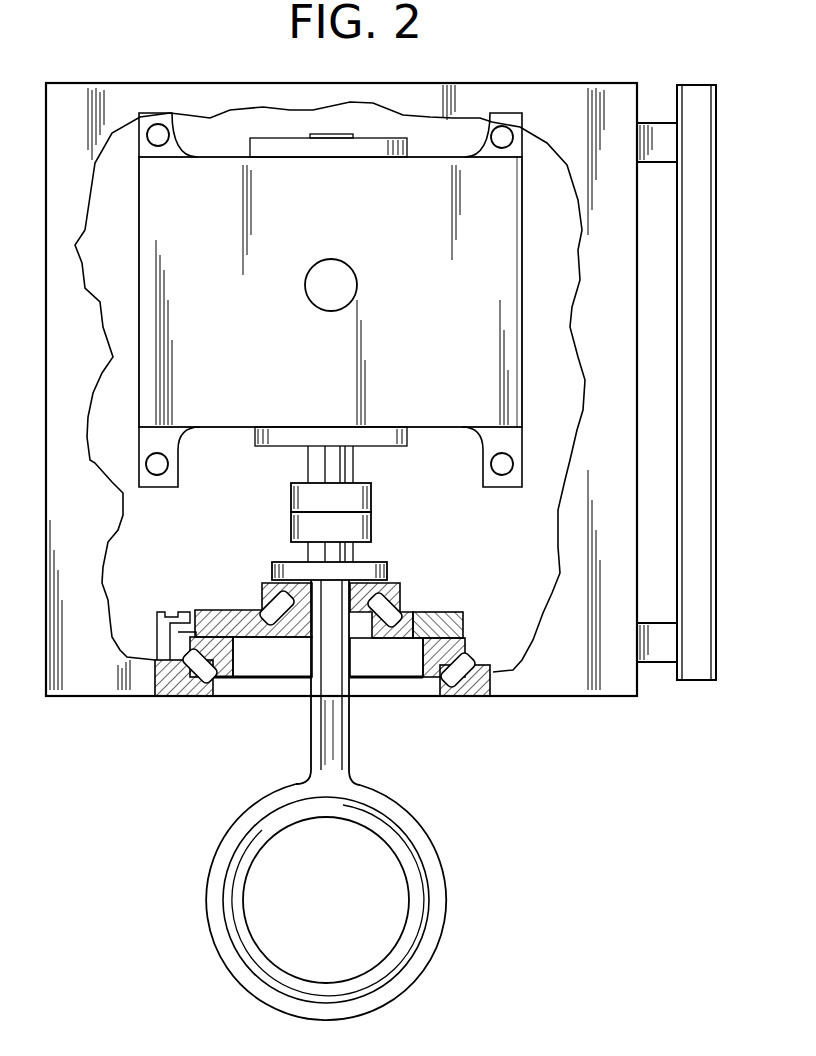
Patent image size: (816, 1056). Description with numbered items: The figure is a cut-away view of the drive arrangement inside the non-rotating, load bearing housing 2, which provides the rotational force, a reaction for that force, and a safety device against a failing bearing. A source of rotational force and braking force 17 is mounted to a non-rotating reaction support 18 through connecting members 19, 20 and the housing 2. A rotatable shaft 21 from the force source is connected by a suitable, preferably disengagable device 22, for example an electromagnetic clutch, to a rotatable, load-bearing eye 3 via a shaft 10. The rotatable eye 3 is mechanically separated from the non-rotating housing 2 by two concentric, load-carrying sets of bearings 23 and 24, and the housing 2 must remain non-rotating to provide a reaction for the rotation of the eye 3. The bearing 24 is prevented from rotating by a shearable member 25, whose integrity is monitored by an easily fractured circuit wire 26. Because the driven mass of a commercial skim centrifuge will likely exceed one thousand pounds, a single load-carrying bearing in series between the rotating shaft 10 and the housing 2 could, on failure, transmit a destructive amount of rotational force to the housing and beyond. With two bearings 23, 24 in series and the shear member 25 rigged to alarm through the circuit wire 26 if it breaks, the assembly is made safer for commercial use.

The non-rotating load bearing housing 2 is at (530, 769).
The rotatable load-bearing eye 3 is at (410, 812).
The shaft 10 is at (349, 712).
The source of rotational force and braking force 17 is at (510, 327).
The non-rotating reaction support 18 is at (716, 665).
The connecting members 19 is at (158, 147).
The connecting members 20 is at (658, 663).
The rotatable shaft 21 is at (355, 464).
The electromagnetic clutch 22 is at (291, 512).
The load-carrying bearing 23 is at (400, 583).
The load-carrying bearing 24 is at (487, 668).
The shearable member 25 is at (158, 628).
The circuit wire 26 is at (240, 604).